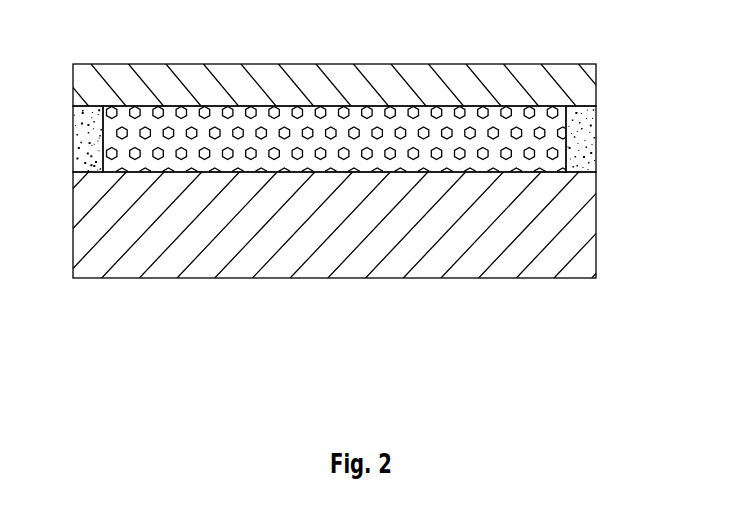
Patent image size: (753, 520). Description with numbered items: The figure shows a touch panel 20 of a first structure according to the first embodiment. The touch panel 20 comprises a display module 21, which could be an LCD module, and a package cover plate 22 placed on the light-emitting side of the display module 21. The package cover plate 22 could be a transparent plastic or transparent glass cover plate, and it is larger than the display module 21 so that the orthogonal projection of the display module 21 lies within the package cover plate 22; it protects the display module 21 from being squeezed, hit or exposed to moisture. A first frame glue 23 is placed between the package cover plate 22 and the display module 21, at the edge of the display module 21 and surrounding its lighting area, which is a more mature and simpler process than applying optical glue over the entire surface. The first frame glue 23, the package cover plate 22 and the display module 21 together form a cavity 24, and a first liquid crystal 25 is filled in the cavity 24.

The touch panel 20 is at (106, 329).
The display module 21 is at (562, 217).
The package cover plate 22 is at (563, 97).
The first frame glue 23 is at (583, 157).
The cavity 24 is at (580, 126).
The first liquid crystal 25 is at (373, 128).